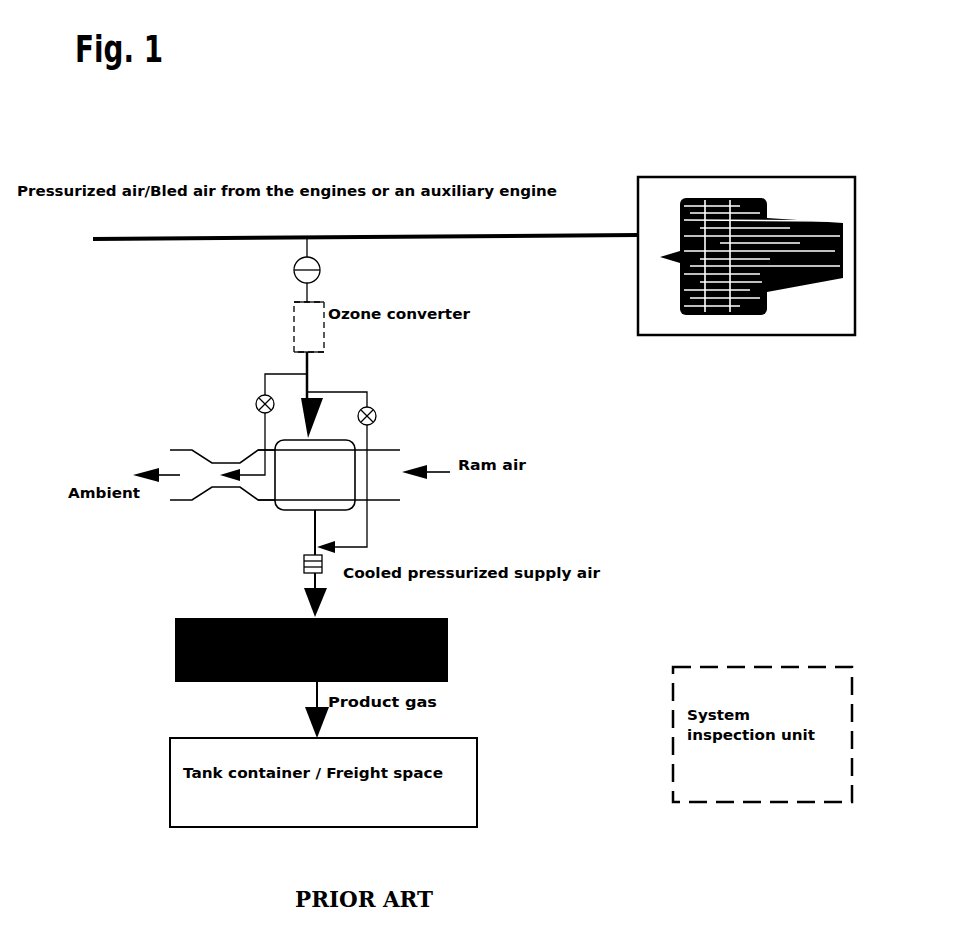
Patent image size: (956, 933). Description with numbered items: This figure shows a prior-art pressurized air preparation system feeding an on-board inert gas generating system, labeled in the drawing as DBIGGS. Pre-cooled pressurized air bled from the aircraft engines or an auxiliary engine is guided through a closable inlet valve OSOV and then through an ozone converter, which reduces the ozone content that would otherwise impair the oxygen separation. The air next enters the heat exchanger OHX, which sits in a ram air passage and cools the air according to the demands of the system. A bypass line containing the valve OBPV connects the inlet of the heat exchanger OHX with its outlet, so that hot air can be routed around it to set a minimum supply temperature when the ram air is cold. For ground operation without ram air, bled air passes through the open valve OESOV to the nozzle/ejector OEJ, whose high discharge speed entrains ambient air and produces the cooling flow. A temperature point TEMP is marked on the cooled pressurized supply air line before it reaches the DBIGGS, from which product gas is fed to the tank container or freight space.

The closable inlet valve OSOV is at (257, 269).
The valve OESOV is at (232, 427).
The valve OBPV is at (380, 471).
The OBIGGS heat exchanger OHX is at (329, 475).
The nozzle/ejector OEJ is at (222, 486).
The temperature sensor TEMP is at (263, 550).
The dual-bed inert gas generating system DBIGGS is at (311, 650).